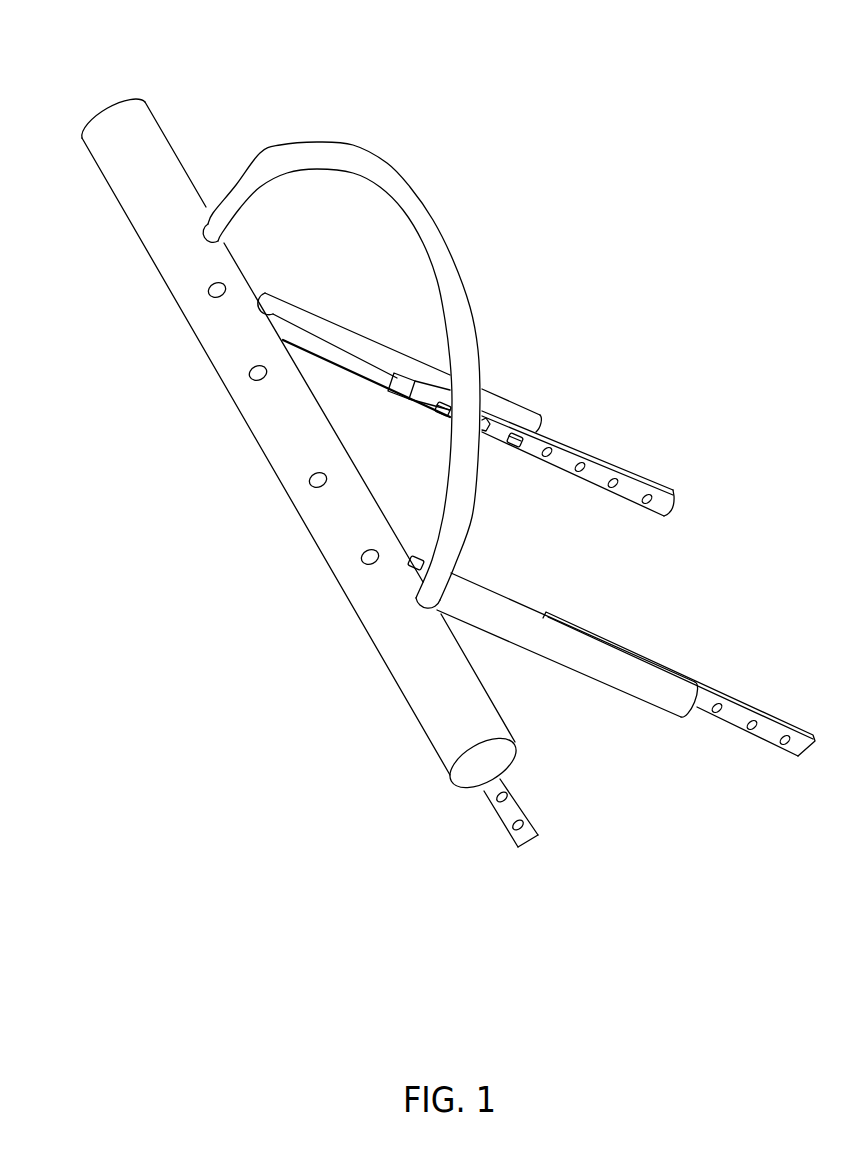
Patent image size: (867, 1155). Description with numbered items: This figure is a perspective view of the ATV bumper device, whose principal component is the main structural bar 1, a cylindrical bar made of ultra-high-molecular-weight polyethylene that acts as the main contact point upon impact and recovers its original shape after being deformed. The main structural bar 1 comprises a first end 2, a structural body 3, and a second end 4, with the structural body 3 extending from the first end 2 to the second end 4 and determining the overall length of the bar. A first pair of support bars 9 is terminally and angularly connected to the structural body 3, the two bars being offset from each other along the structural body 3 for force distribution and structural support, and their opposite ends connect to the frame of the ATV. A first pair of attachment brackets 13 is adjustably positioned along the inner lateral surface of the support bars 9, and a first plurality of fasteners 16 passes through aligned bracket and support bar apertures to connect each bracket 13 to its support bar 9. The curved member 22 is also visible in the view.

The main structural bar 1 is at (194, 135).
The first end 2 is at (106, 107).
The structural body 3 is at (264, 427).
The second end 4 is at (472, 778).
The first pair of support bars 9 is at (352, 342).
The first pair of attachment brackets 13 is at (637, 487).
The first plurality of fasteners 16 is at (446, 413).
The arcuate member 22 is at (472, 298).